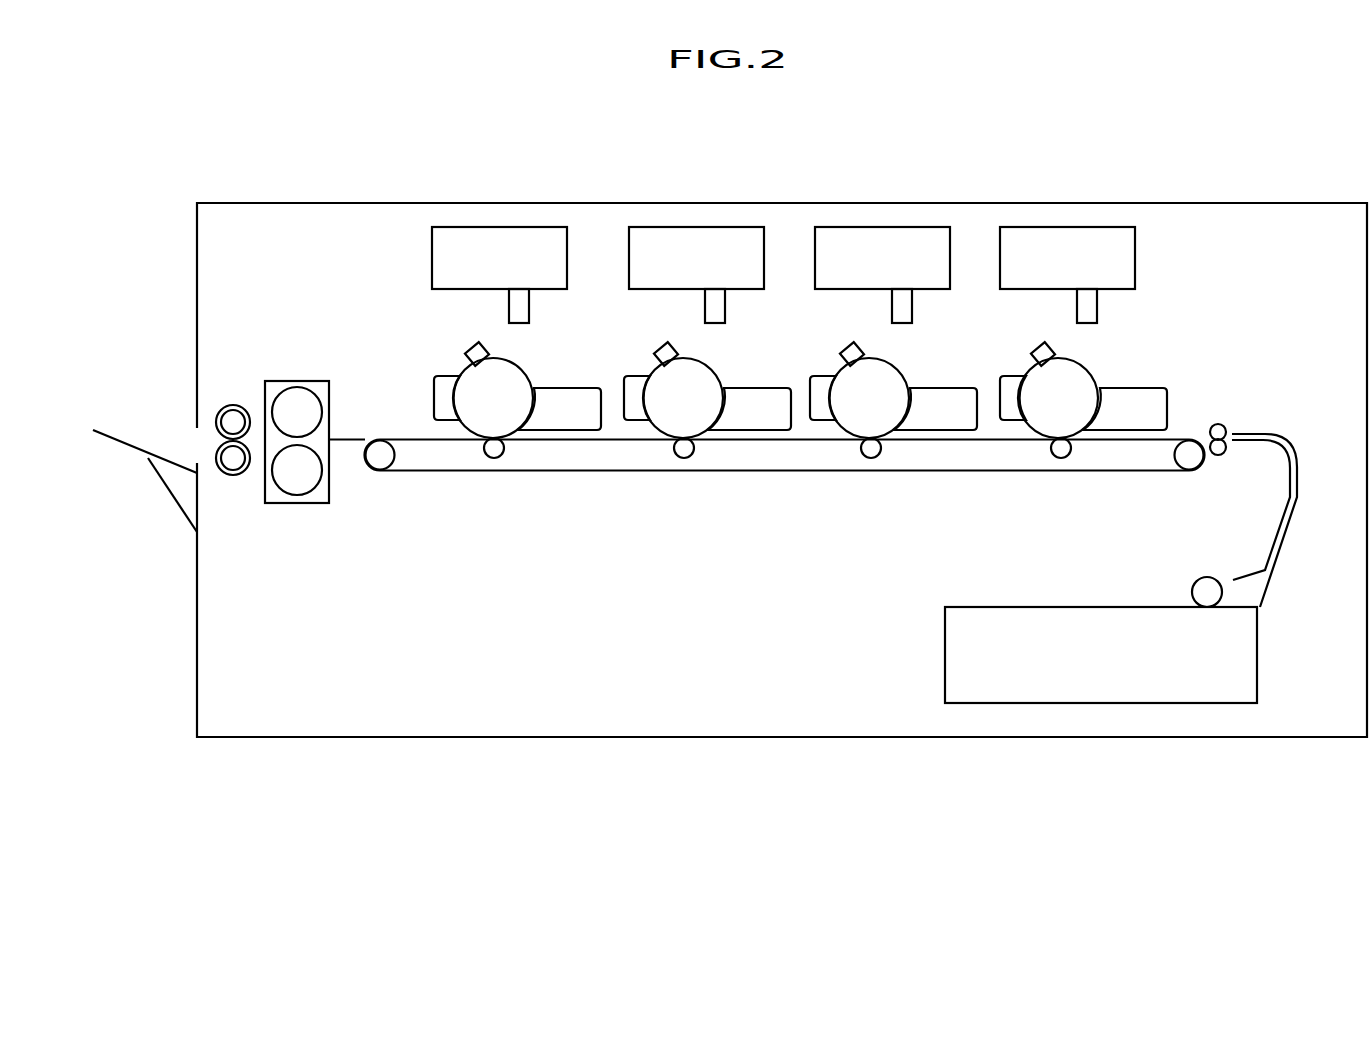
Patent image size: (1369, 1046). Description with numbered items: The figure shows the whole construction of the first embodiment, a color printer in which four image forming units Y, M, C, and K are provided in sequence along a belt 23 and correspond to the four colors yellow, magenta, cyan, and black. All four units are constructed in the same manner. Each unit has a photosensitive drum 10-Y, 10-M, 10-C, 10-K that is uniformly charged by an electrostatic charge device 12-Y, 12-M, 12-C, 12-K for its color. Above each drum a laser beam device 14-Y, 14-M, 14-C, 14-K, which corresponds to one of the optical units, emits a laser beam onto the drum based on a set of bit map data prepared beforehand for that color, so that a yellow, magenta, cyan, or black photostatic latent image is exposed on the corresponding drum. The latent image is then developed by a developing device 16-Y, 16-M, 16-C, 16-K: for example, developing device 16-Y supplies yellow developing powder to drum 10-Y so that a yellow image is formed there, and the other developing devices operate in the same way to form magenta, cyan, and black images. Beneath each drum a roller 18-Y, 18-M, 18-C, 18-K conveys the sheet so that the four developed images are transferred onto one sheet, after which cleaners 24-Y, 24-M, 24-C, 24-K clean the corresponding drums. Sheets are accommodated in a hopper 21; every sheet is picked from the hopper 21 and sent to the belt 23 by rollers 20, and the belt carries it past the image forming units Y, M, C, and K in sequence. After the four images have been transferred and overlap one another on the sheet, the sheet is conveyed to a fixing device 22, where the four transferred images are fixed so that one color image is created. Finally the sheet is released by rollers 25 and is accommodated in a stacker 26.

The photosensitive drum 10-K is at (508, 418).
The photosensitive drum 10-C is at (698, 418).
The photosensitive drum 10-M is at (884, 418).
The photosensitive drum 10-Y is at (1073, 418).
The electrostatic charge device 12-K is at (480, 345).
The electrostatic charge device 12-C is at (666, 347).
The electrostatic charge device 12-M is at (852, 347).
The electrostatic charge device 12-Y is at (1038, 347).
The laser beam device 14-K is at (480, 237).
The laser beam device 14-C is at (664, 238).
The laser beam device 14-M is at (850, 238).
The laser beam device 14-Y is at (1038, 238).
The developing device 16-K is at (543, 393).
The developing device 16-C is at (732, 395).
The developing device 16-M is at (918, 395).
The developing device 16-Y is at (1108, 395).
The roller 18-K is at (493, 458).
The roller 18-C is at (683, 458).
The roller 18-M is at (871, 458).
The roller 18-Y is at (1061, 458).
The cleaner 24-K is at (443, 420).
The cleaner 24-C is at (633, 420).
The cleaner 24-M is at (823, 419).
The cleaner 24-Y is at (1012, 418).
The image forming unit K is at (496, 385).
The image forming unit C is at (685, 384).
The image forming unit M is at (873, 383).
The image forming unit Y is at (1061, 382).
The rollers 20 is at (1216, 424).
The hopper 21 is at (952, 680).
The fixing device 22 is at (305, 483).
The belt 23 is at (420, 470).
The rollers 25 is at (225, 405).
The stacker 26 is at (107, 443).